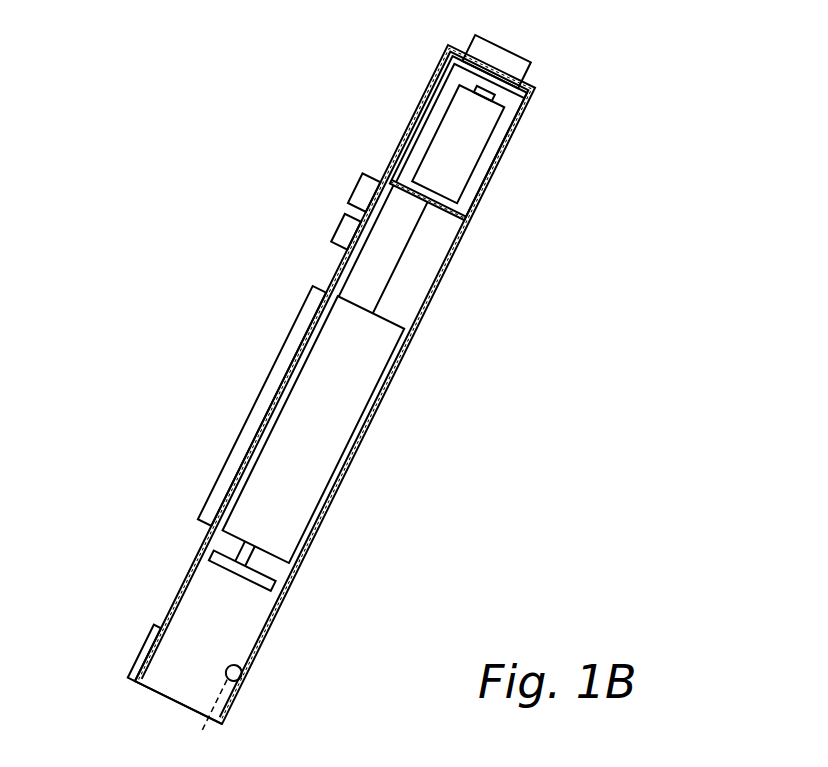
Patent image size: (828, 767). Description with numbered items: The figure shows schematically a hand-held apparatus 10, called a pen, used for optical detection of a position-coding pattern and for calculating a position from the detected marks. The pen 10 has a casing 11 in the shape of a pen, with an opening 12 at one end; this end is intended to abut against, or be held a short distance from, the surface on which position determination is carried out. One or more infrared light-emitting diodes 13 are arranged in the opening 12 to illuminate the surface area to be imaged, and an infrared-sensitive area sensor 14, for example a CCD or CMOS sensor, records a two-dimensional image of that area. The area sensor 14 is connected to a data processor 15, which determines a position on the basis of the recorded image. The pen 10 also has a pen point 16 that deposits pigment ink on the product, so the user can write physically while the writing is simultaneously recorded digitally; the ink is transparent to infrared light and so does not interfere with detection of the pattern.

The hand-held apparatus 10 is at (400, 133).
The casing 11 is at (406, 351).
The opening 12 is at (171, 699).
The infrared light-emitting diode 13 is at (244, 679).
The area sensor 14 is at (270, 573).
The data processor 15 is at (318, 450).
The pen point 16 is at (147, 642).